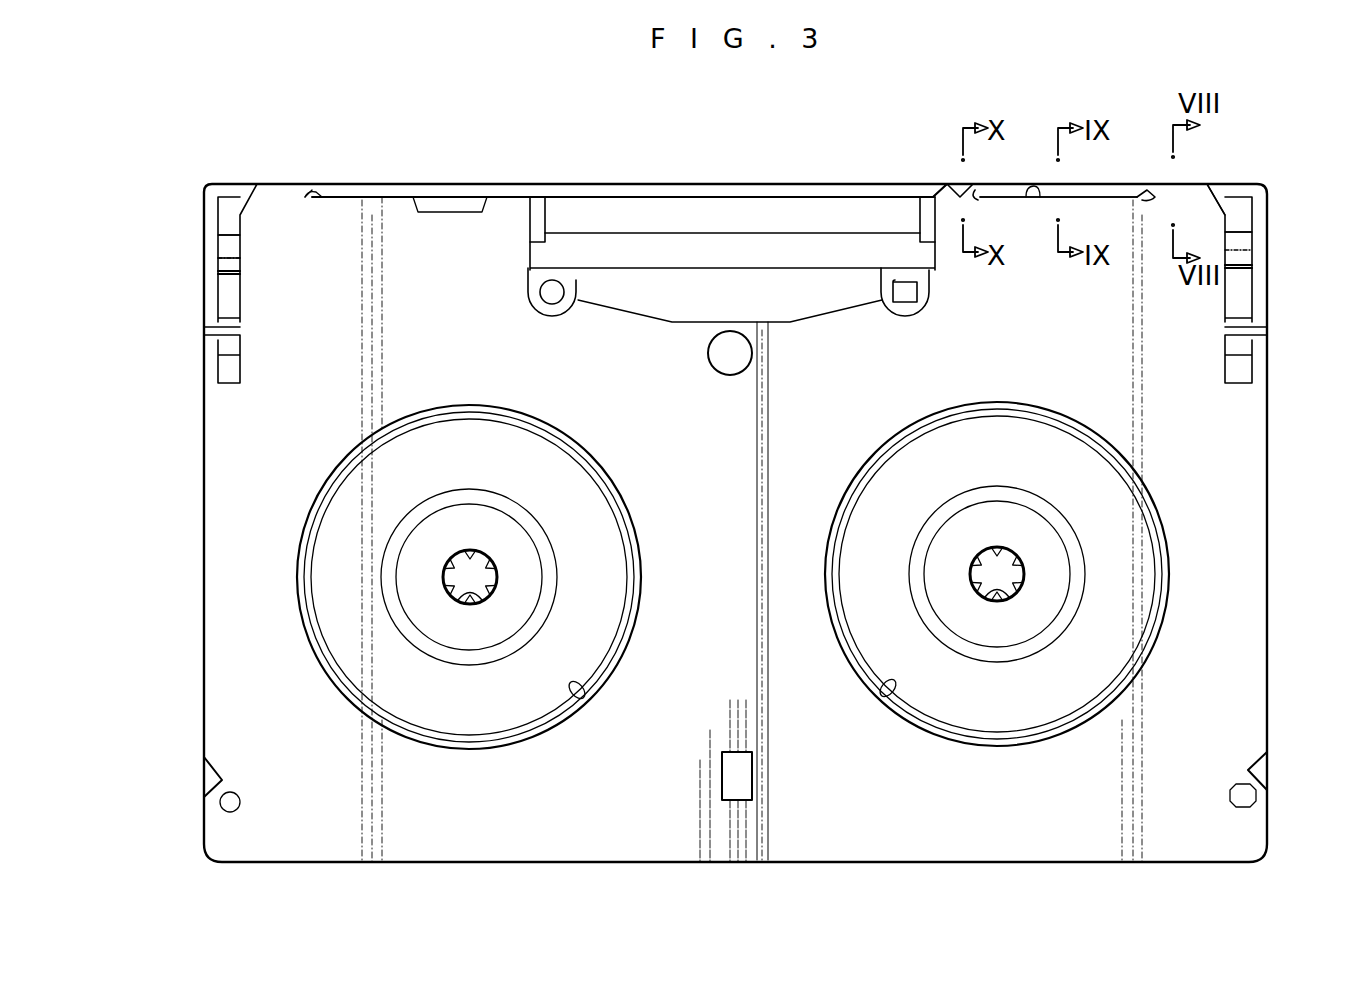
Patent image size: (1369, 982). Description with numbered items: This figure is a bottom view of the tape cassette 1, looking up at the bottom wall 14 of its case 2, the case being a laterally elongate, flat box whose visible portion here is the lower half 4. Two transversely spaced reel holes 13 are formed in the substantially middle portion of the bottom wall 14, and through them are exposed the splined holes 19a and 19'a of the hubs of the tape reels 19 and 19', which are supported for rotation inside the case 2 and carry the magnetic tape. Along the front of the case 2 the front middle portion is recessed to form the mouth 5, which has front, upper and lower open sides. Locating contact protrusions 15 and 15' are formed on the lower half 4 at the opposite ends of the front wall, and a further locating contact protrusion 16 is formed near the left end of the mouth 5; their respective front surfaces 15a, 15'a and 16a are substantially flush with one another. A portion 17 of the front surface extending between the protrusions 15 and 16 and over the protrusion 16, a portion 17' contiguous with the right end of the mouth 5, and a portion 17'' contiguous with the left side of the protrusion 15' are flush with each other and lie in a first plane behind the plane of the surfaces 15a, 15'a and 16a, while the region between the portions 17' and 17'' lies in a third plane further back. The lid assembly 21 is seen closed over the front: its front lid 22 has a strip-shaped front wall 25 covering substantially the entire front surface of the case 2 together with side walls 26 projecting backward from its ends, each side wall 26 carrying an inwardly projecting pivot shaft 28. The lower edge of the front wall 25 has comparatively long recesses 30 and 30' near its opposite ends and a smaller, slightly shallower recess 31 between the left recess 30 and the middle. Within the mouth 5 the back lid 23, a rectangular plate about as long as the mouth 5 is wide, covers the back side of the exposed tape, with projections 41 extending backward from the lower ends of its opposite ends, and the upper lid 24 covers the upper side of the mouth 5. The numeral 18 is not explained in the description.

The tape cassette 1 is at (1273, 148).
The case 2 is at (1267, 508).
The lower half 4 is at (1255, 605).
The mouth 5 is at (822, 312).
The reel holes 13 is at (582, 694).
The bottom wall 14 is at (1205, 675).
The locating contact protrusion 15 is at (1157, 151).
The front surface 15a is at (1180, 187).
The locating contact protrusion 15' is at (295, 149).
The front surface 15'a is at (240, 149).
The locating contact protrusion 16 is at (965, 188).
The front surface 16a is at (950, 190).
The front surface portion 17 is at (1058, 244).
The front surface portion 17' is at (482, 243).
The front surface portion 17'' is at (344, 240).
The recess 18 is at (440, 212).
The tape reel 19 is at (998, 580).
The tape reel 19' is at (508, 577).
The splined hole 19a is at (992, 598).
The splined hole 19'a is at (468, 633).
The lid assembly 21 is at (857, 136).
The front lid 22 is at (700, 200).
The back lid 23 is at (742, 240).
The upper lid 24 is at (768, 310).
The front wall 25 is at (600, 190).
The side walls 26 is at (210, 255).
The pivot shaft 28 is at (232, 222).
The recess 30 is at (1136, 170).
The recess 30' is at (337, 156).
The small recess 31 is at (978, 192).
The projections 41 is at (538, 220).